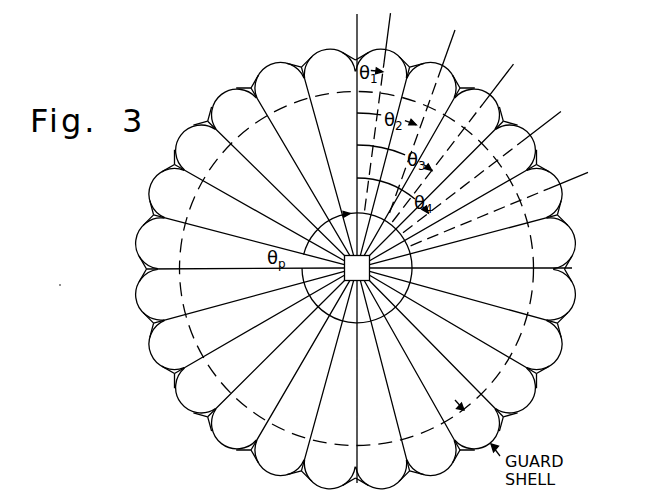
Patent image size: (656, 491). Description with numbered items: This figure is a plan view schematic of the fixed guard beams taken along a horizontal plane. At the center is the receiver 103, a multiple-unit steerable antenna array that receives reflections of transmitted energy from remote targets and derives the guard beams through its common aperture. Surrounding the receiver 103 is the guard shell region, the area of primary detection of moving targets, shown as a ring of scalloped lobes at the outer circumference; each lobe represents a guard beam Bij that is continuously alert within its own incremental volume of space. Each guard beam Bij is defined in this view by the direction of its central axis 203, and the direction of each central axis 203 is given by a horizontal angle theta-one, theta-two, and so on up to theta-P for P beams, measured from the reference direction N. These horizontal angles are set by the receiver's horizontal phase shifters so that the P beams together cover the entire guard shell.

The receiver 103 is at (395, 266).
The central axis 203 is at (462, 27).
The guard beam Bij is at (568, 248).
The north reference direction N is at (352, 127).